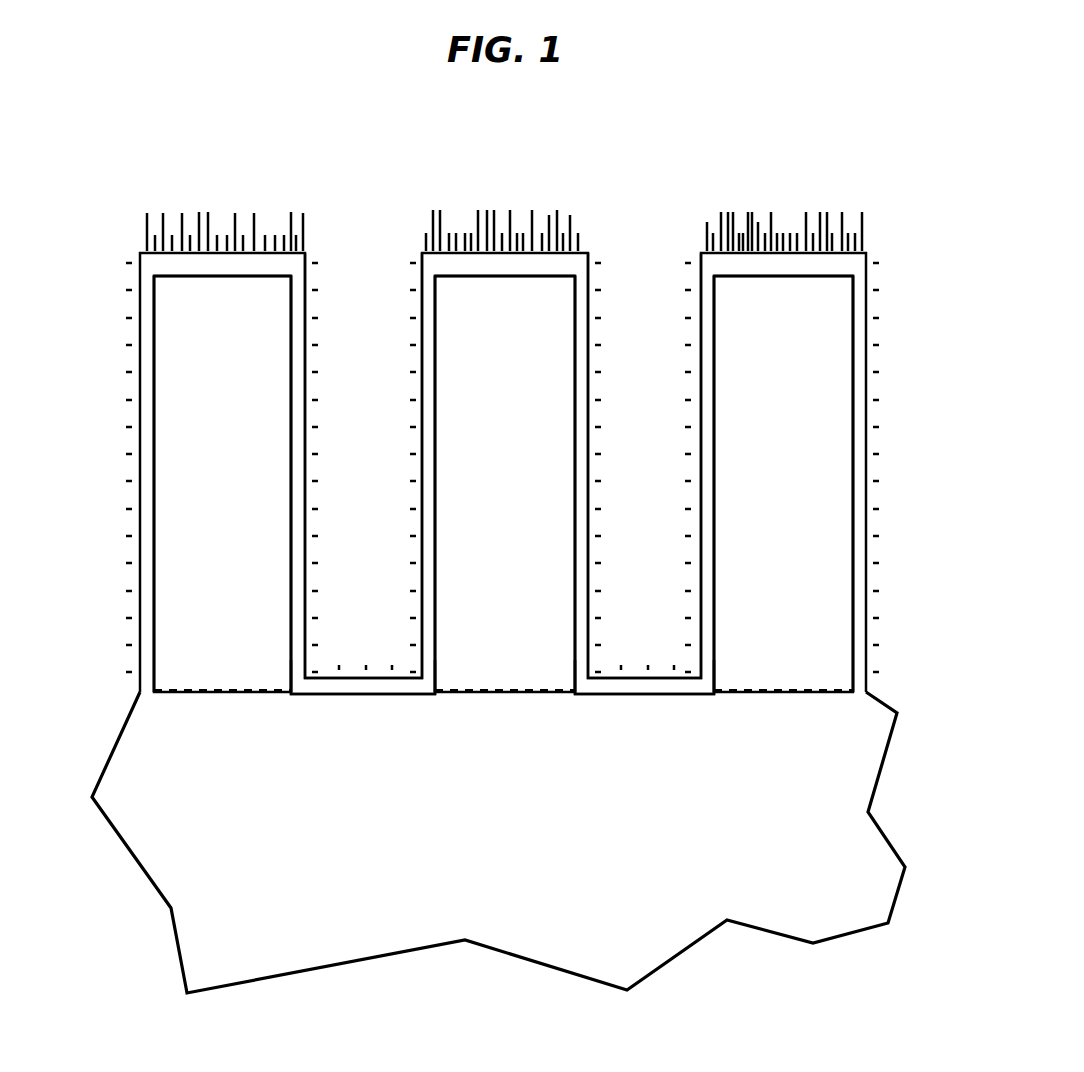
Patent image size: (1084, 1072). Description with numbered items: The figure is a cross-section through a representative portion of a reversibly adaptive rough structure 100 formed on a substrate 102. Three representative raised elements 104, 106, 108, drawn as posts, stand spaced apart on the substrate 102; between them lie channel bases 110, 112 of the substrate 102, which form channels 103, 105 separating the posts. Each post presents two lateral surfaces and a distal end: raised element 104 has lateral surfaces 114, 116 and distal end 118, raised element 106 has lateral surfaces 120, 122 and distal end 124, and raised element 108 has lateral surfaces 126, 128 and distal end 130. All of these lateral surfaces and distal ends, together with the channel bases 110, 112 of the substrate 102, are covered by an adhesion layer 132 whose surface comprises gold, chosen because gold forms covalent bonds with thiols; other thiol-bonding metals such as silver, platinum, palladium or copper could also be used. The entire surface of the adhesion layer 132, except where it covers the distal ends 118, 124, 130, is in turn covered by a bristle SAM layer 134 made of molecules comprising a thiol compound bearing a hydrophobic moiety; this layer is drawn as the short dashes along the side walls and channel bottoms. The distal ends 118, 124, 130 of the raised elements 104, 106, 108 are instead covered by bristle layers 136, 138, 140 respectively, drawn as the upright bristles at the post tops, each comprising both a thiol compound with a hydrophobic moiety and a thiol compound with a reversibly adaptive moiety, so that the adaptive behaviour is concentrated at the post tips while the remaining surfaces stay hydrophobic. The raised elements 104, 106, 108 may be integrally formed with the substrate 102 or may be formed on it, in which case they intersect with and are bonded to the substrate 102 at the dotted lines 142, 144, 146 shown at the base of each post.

The reversibly adaptive rough structure 100 is at (836, 126).
The substrate 102 is at (499, 883).
The channel 103 is at (344, 315).
The raised element 104 is at (206, 542).
The channel 105 is at (624, 315).
The raised element 106 is at (489, 493).
The raised element 108 is at (767, 493).
The channel base 110 is at (366, 696).
The channel base 112 is at (646, 696).
The lateral surface 114 is at (154, 437).
The lateral surface 116 is at (291, 396).
The distal end 118 is at (219, 278).
The lateral surface 120 is at (436, 437).
The lateral surface 122 is at (575, 396).
The distal end 124 is at (502, 278).
The lateral surface 126 is at (714, 437).
The lateral surface 128 is at (853, 396).
The distal end 130 is at (781, 277).
The adhesion layer 132 is at (297, 497).
The bristle SAM layer 134 is at (410, 376).
The bristle layer 136 is at (218, 220).
The bristle layer 138 is at (517, 220).
The bristle layer 140 is at (786, 220).
The dotted line 142 is at (219, 696).
The dotted line 144 is at (504, 696).
The dotted line 146 is at (785, 696).